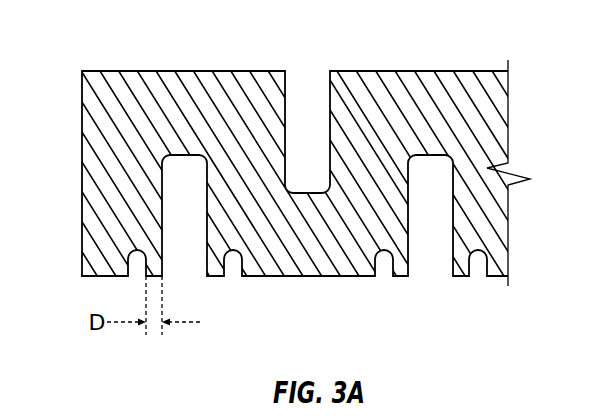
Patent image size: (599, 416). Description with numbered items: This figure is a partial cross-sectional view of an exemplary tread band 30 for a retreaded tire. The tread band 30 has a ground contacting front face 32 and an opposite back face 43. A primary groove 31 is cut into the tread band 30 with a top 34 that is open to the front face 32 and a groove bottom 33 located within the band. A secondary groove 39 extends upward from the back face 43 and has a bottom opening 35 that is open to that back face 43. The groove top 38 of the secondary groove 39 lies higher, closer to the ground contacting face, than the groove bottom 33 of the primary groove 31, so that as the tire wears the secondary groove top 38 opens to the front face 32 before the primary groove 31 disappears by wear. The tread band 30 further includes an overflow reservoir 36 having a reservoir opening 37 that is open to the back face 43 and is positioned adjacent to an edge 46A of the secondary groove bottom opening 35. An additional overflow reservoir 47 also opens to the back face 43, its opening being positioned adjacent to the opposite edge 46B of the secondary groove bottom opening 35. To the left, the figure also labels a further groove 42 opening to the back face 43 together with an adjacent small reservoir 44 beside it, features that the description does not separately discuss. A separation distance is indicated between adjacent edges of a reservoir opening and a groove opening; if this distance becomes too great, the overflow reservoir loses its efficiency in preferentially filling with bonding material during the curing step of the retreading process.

The tread band 30 is at (82, 133).
The primary groove 31 is at (307, 88).
The front face 32 is at (157, 72).
The groove bottom 33 is at (294, 191).
The top 34 is at (293, 75).
The bottom opening 35 is at (428, 277).
The overflow reservoir 36 is at (477, 250).
The reservoir opening 37 is at (477, 270).
The groove top 38 is at (427, 153).
The secondary groove 39 is at (183, 173).
The first channel 42 is at (208, 278).
The back face 43 is at (90, 277).
The notch 44 is at (213, 277).
The edge 46A is at (453, 278).
The opposite edge 46B is at (408, 278).
The additional overflow reservoir 47 is at (375, 263).